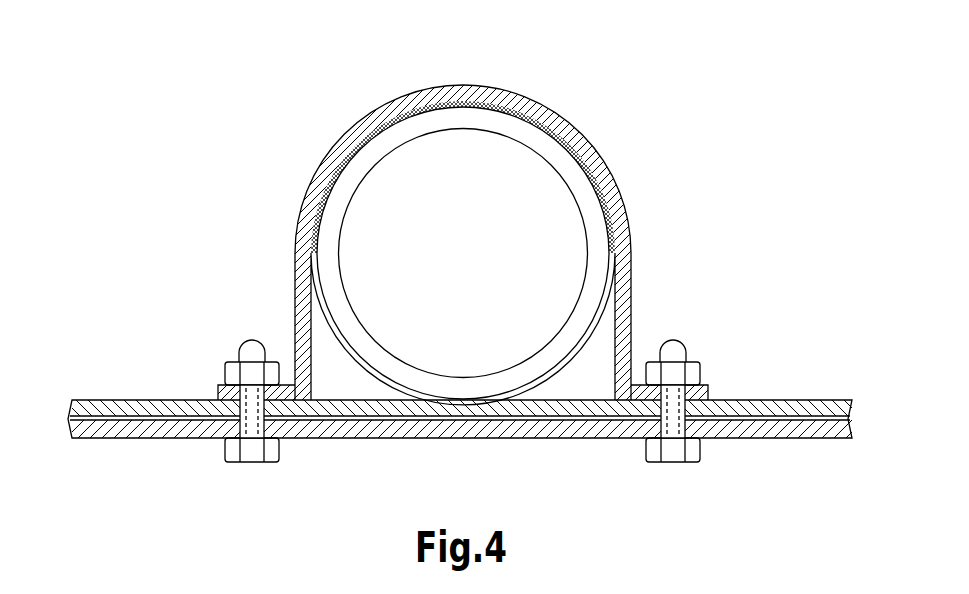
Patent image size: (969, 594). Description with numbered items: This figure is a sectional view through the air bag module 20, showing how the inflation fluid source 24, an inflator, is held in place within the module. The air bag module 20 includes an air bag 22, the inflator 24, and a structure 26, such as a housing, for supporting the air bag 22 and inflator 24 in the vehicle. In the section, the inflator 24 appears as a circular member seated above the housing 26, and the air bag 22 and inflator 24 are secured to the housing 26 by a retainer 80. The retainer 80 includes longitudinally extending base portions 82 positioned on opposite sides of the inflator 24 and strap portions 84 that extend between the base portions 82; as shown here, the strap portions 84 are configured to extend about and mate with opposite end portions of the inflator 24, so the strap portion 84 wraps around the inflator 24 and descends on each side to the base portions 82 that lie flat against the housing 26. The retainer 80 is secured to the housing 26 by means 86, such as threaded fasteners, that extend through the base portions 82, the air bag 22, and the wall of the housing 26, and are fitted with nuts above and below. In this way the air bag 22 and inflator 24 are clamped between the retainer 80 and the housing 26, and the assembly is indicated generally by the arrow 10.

The pipe support assembly 10 is at (292, 138).
The air bag module 20 is at (352, 90).
The air bag 22 is at (107, 398).
The inflation fluid source 24 is at (565, 160).
The structure 26 is at (130, 427).
The retainer 80 is at (490, 92).
The base portions 82 is at (225, 386).
The strap portions 84 is at (430, 98).
The means 86 is at (255, 420).